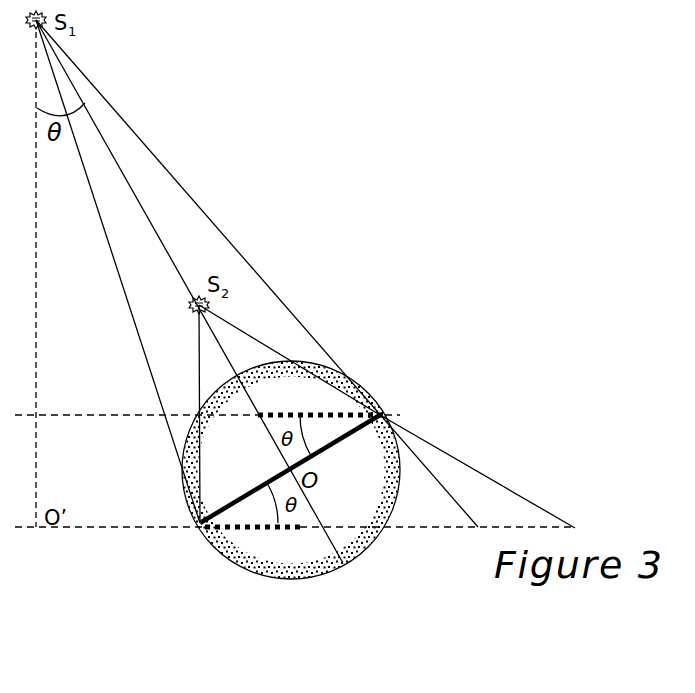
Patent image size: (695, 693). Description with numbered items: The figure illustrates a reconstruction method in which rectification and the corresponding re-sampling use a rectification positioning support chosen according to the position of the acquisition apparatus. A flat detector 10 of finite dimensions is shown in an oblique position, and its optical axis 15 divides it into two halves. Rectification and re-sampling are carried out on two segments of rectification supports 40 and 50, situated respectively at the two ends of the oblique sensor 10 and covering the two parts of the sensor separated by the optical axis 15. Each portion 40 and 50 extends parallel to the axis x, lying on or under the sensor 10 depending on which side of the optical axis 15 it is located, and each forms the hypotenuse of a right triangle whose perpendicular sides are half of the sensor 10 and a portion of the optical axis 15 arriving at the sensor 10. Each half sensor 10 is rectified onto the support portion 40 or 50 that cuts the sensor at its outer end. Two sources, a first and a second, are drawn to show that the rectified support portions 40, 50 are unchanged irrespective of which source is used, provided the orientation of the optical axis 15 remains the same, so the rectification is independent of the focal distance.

The optical axis 15 is at (145, 205).
The flat detector 10 is at (340, 418).
The rectification support segment 50 is at (340, 415).
The rectification support segment 40 is at (280, 527).